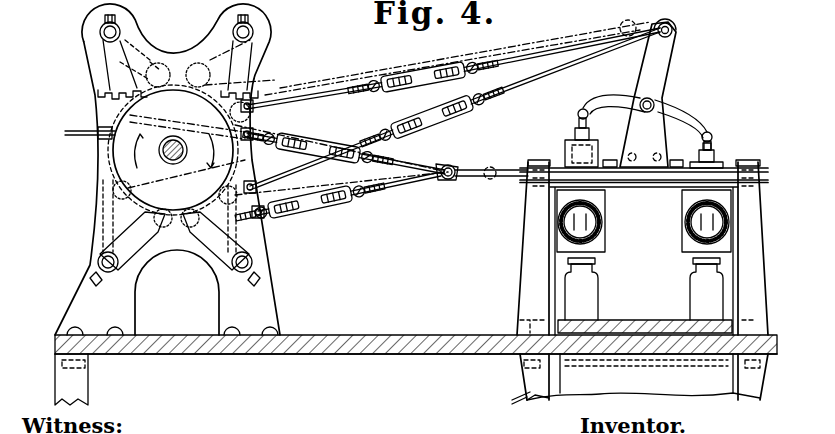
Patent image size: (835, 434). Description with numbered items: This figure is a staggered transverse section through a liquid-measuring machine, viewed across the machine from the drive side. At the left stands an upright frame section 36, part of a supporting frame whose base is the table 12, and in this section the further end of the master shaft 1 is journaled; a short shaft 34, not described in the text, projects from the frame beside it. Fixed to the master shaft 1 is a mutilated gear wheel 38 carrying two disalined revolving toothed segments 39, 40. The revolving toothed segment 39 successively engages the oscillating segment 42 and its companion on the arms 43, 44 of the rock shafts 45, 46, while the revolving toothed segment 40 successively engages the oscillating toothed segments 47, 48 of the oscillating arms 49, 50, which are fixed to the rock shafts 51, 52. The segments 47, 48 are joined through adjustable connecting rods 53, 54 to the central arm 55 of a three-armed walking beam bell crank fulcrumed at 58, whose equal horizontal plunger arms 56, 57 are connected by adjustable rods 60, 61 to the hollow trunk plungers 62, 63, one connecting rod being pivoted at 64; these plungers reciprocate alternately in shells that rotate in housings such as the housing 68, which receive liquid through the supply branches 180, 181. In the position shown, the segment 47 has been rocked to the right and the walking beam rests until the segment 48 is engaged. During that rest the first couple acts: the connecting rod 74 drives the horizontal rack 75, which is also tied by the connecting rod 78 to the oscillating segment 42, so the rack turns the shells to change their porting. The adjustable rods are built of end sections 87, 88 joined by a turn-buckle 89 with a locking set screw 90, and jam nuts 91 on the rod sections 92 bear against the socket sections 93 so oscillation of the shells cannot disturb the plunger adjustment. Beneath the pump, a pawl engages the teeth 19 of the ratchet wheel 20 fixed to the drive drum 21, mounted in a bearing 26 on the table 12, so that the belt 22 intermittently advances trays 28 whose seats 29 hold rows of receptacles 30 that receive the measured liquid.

The master shaft 1 is at (172, 165).
The table 12 is at (55, 339).
The teeth 19 is at (520, 398).
The ratchet wheel 20 is at (528, 405).
The drive drum 21 is at (628, 388).
The belt 22 is at (665, 335).
The bearing 26 is at (758, 390).
The tray 28 is at (520, 312).
The seat 29 is at (615, 312).
The receptacle 30 is at (592, 295).
The shaft 34 is at (103, 138).
The frame section 36 is at (92, 63).
The mutilated gear wheel 38 is at (125, 163).
The revolving toothed segment 39 is at (120, 109).
The revolving toothed segment 40 is at (238, 158).
The oscillating toothed segment 42 is at (187, 214).
The arm 43 is at (130, 55).
The arm 44 is at (280, 238).
The rock shaft 45 is at (113, 28).
The rock shaft 46 is at (254, 262).
The oscillating toothed segment 47 is at (262, 86).
The oscillating toothed segment 48 is at (146, 214).
The oscillating arm 49 is at (248, 63).
The oscillating arm 50 is at (140, 232).
The rock shaft 51 is at (254, 30).
The rock shaft 52 is at (98, 262).
The adjustable connecting rod 53 is at (538, 42).
The adjustable connecting rod 54 is at (540, 82).
The central arm 55 is at (672, 28).
The plunger arm 56 is at (600, 95).
The plunger arm 57 is at (700, 120).
The fulcrum 58 is at (656, 100).
The adjustable rod 60 is at (575, 136).
The adjustable rod 61 is at (714, 148).
The hollow trunk plunger 62 is at (565, 154).
The hollow trunk plunger 63 is at (724, 164).
The pivot 64 is at (682, 200).
The housing 68 is at (526, 182).
The connecting rod 74 is at (428, 162).
The horizontal rack 75 is at (492, 167).
The connecting rod 78 is at (418, 190).
The end section 87 is at (332, 95).
The end section 88 is at (492, 62).
The turn-buckle 89 is at (415, 65).
The locking set screw 90 is at (377, 80).
The jam nut 91 is at (590, 134).
The rod section 92 is at (580, 122).
The socket section 93 is at (540, 146).
The supply branch 180 is at (687, 232).
The supply branch 181 is at (600, 226).